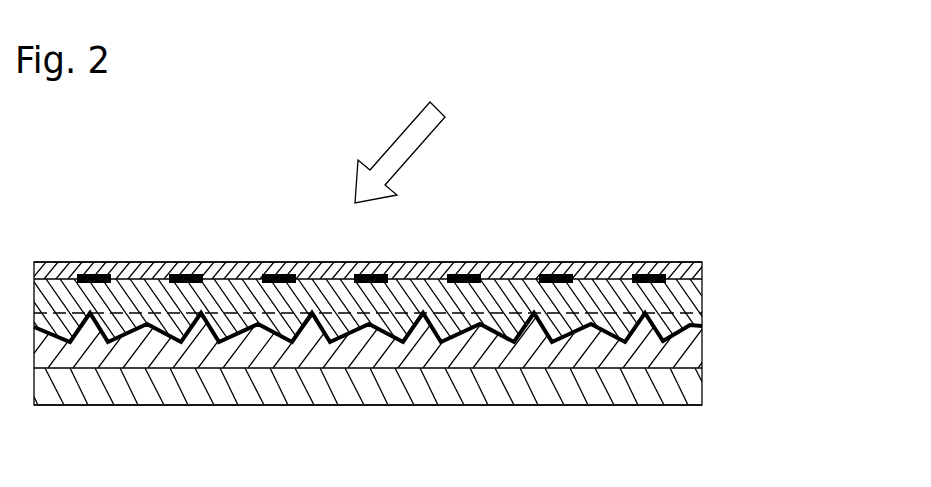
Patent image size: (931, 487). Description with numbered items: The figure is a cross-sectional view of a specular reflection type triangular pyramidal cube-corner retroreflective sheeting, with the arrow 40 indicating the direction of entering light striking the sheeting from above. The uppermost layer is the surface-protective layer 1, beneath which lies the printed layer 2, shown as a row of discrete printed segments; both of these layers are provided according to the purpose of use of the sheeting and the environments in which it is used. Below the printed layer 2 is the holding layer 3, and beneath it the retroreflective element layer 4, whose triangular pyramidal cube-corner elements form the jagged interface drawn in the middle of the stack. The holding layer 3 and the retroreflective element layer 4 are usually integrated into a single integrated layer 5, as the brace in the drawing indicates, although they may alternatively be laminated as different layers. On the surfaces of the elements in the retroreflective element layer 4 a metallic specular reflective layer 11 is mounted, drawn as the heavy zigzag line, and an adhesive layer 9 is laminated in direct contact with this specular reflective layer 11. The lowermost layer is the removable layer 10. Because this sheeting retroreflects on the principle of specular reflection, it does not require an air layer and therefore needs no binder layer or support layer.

The surface-protective layer 1 is at (648, 268).
The printed layer 2 is at (656, 277).
The holding layer 3 is at (665, 299).
The retroreflective element layer 4 is at (668, 325).
The integrated layer 5 is at (459, 312).
The adhesive layer 9 is at (627, 353).
The removable layer 10 is at (627, 387).
The metallic specular reflective layer 11 is at (628, 342).
The direction of entering light 40 is at (424, 139).